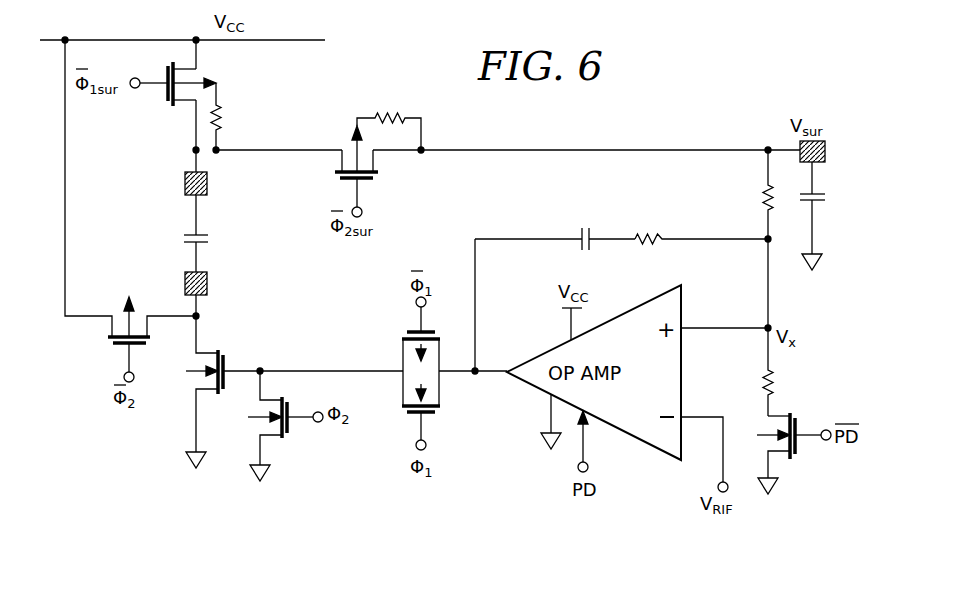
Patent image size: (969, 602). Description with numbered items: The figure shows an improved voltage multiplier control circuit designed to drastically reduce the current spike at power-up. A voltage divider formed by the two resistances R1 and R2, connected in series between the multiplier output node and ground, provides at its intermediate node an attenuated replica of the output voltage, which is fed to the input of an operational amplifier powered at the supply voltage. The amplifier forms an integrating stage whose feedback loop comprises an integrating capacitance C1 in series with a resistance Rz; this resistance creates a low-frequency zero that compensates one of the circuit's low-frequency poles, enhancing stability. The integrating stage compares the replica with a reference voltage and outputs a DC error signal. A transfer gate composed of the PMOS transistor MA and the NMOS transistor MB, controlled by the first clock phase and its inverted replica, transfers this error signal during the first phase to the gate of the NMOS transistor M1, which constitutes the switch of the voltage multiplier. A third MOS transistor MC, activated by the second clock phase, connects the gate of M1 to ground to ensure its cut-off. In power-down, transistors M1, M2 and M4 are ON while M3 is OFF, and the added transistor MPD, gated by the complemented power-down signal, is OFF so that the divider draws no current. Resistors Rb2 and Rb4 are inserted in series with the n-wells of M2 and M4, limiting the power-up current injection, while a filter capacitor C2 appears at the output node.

The NMOS transistor M1 is at (283, 392).
The PMOS transistor M2 is at (178, 95).
The MOS transistor M3 is at (138, 339).
The PMOS transistor M4 is at (349, 171).
The PMOS transistor of transfer gate MA is at (414, 351).
The NMOS transistor of transfer gate MB is at (431, 417).
The third MOS transistor MC is at (285, 426).
The power-down MOS transistor MPD is at (794, 453).
The resistor Rb2 is at (234, 116).
The resistor Rb4 is at (389, 121).
The resistance R1 is at (779, 372).
The resistance R2 is at (753, 194).
The resistance Rz is at (701, 227).
The integrating capacitance C1 is at (409, 244).
The capacitor C2 is at (825, 216).